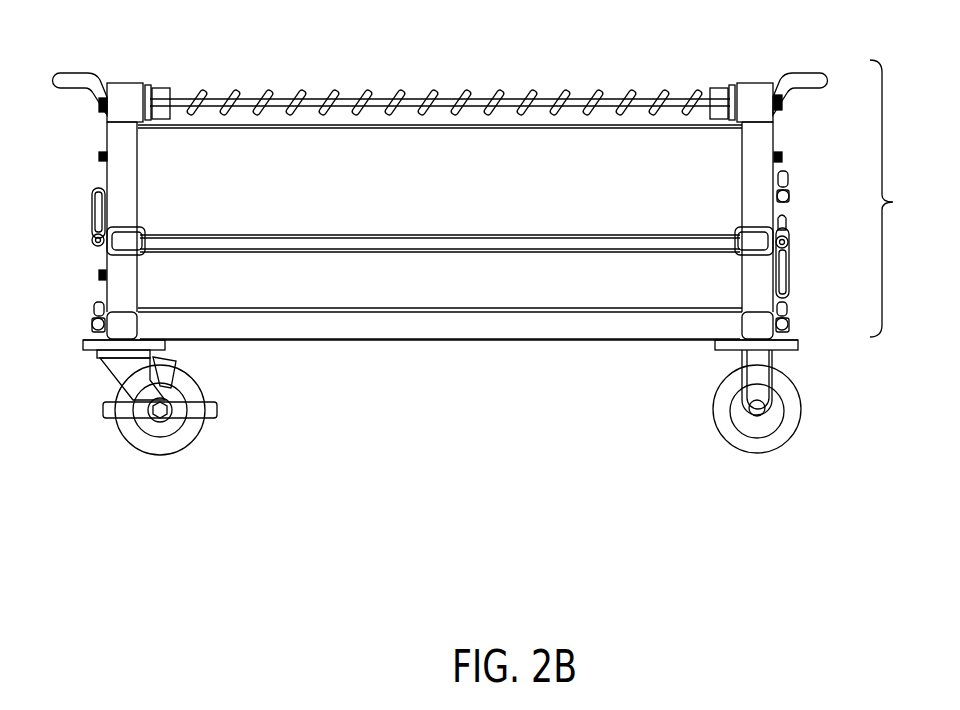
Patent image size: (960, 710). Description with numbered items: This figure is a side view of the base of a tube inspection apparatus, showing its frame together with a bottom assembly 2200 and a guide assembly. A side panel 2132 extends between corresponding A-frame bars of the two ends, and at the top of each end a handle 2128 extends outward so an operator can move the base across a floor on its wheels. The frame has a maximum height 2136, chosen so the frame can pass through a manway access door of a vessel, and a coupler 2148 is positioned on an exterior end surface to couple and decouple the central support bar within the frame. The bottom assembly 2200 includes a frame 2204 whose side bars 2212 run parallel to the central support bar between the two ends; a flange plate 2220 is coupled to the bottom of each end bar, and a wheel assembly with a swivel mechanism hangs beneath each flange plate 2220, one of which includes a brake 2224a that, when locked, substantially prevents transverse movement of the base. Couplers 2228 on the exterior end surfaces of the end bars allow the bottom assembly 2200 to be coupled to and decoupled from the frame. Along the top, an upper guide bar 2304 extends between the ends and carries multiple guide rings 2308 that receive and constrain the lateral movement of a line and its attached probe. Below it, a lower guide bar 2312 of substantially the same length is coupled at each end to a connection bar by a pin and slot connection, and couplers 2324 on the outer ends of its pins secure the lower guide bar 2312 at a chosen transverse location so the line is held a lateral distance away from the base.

The handle 2128 is at (73, 90).
The side panel 2132 is at (167, 158).
The maximum height 2136 is at (902, 198).
The coupler 2148 is at (793, 190).
The bottom assembly 2200 is at (382, 340).
The frame 2204 is at (585, 340).
The side bar 2212 is at (528, 340).
The flange plate 2220 is at (83, 342).
The brake 2224a is at (175, 365).
The coupler 2228 is at (93, 315).
The upper guide bar 2304 is at (410, 97).
The guide ring 2308 is at (332, 93).
The lower guide bar 2312 is at (515, 252).
The coupler 2324 is at (107, 245).